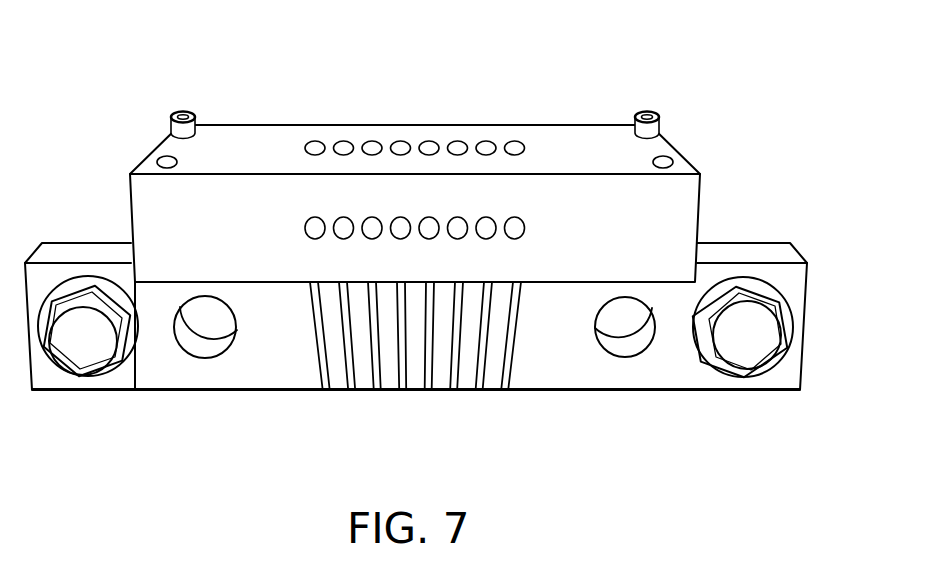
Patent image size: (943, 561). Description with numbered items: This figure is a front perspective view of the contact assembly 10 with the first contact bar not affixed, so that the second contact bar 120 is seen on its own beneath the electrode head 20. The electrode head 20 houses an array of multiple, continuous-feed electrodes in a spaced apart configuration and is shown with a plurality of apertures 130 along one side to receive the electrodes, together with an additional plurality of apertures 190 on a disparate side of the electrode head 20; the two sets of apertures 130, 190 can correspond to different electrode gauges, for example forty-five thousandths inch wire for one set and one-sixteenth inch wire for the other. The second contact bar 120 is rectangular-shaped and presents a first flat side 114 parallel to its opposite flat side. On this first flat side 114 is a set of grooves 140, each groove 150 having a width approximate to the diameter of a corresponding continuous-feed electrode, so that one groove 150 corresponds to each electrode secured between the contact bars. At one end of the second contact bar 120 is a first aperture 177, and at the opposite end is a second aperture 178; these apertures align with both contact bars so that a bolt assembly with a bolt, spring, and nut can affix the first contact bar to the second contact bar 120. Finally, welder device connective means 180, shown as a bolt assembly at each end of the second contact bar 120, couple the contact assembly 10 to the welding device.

The contact assembly 10 is at (705, 92).
The electrode head 20 is at (665, 150).
The first flat side 114 is at (265, 375).
The second contact bar 120 is at (667, 378).
The plurality of apertures 130 is at (462, 118).
The set of grooves 140 is at (418, 400).
The groove 150 is at (324, 386).
The first aperture 177 is at (207, 342).
The second aperture 178 is at (620, 345).
The welder device connective means 180 is at (70, 398).
The plurality of apertures 190 is at (545, 228).